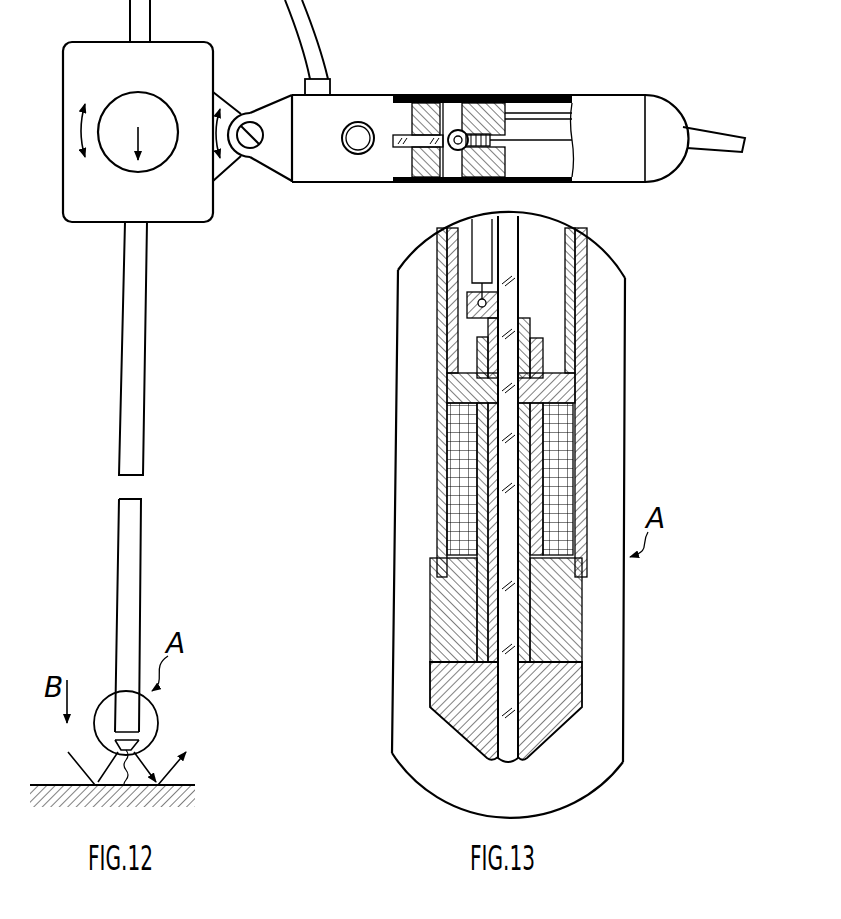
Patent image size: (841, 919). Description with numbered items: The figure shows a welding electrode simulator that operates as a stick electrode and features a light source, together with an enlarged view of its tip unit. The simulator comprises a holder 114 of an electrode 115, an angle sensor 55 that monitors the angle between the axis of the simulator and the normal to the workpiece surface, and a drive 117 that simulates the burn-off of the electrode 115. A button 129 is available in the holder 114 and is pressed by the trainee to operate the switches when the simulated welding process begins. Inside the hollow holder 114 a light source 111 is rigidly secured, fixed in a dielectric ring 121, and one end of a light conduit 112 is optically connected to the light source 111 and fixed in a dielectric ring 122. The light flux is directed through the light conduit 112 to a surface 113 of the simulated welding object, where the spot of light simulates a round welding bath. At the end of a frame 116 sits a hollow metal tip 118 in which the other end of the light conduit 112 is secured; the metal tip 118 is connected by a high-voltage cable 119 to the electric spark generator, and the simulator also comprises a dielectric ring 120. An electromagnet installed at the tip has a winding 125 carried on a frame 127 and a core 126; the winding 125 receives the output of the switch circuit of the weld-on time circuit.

In FIG. 12, the drive 117 is at (206, 63).
In FIG. 12, the angle sensor 55 is at (160, 159).
In FIG. 12, the holder 114 is at (604, 102).
In FIG. 12, the button 129 is at (361, 126).
In FIG. 12, the light conduit 112 is at (423, 103).
In FIG. 13, the light conduit 112 is at (507, 483).
In FIG. 12, the light source 111 is at (459, 128).
In FIG. 12, the high-voltage cable 119 is at (523, 113).
In FIG. 13, the high-voltage cable 119 is at (482, 255).
In FIG. 12, the dielectric ring 122 is at (420, 183).
In FIG. 12, the dielectric ring 121 is at (473, 183).
In FIG. 12, the electrode 115 is at (136, 560).
In FIG. 12, the metal tip 118 is at (136, 738).
In FIG. 13, the metal tip 118 is at (437, 693).
In FIG. 12, the surface 113 is at (182, 783).
In FIG. 13, the frame 116 is at (437, 282).
In FIG. 13, the dielectric ring 120 is at (440, 310).
In FIG. 13, the frame of the winding 127 is at (482, 370).
In FIG. 13, the core 126 is at (440, 387).
In FIG. 13, the winding 125 is at (458, 430).